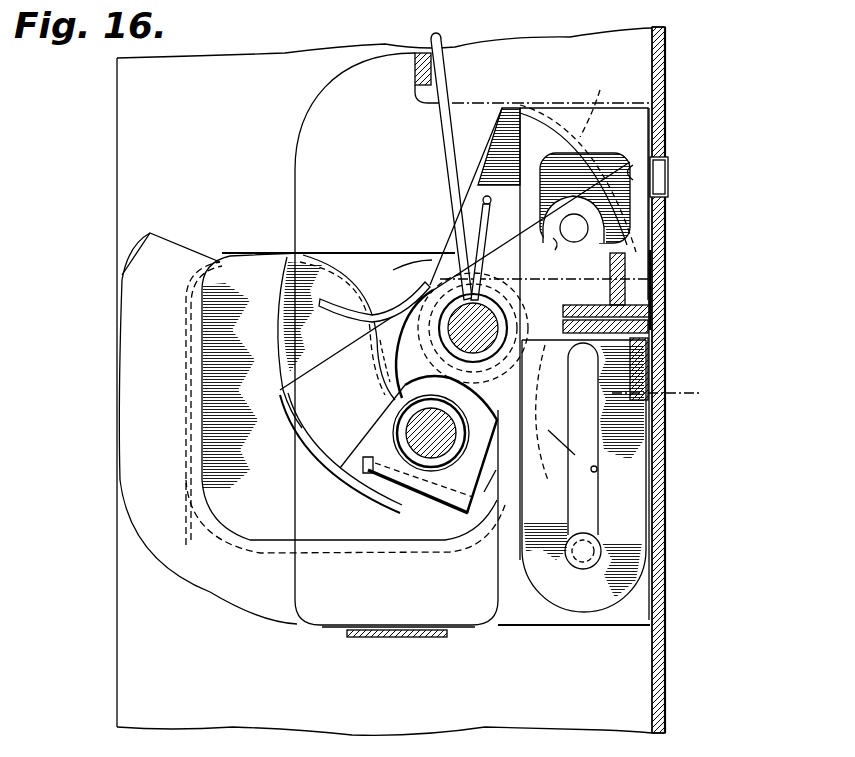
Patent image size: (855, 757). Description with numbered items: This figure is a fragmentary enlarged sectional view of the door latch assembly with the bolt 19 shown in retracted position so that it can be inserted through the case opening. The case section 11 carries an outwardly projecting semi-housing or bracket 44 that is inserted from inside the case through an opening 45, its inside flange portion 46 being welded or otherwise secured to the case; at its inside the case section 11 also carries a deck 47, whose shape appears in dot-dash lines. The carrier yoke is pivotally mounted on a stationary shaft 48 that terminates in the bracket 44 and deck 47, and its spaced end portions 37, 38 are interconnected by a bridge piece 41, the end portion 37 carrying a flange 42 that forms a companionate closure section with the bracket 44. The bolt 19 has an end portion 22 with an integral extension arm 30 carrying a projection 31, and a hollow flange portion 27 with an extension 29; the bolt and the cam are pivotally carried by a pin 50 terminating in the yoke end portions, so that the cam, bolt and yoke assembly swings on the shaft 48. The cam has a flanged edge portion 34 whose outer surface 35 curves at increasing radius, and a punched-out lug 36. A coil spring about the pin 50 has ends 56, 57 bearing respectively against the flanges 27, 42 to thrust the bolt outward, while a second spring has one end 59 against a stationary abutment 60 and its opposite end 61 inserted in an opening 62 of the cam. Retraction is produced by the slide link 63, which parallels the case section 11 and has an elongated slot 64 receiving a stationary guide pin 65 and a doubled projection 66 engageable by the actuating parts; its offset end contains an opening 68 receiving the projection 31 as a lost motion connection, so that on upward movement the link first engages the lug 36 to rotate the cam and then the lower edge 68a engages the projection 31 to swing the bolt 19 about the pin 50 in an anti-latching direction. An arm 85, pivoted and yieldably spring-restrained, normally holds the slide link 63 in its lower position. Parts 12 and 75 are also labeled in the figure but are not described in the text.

The case section 11 is at (140, 158).
The side wall 12 is at (666, 591).
The bolt 19 is at (323, 468).
The end portion 22 is at (313, 407).
The hollow flange portion 27 is at (278, 303).
The extension 29 is at (378, 500).
The extension arm 30 is at (628, 231).
The projection 31 is at (582, 222).
The flanged edge portion 34 is at (556, 128).
The outer surface 35 is at (596, 103).
The punched-out lug 36 is at (506, 214).
The end portion 37 is at (410, 287).
The end portion 38 is at (378, 492).
The bridge piece 41 is at (426, 494).
The flange 42 is at (665, 386).
The bracket 44 is at (245, 262).
The opening 45 is at (262, 540).
The inside flange portion 46 is at (133, 337).
The deck 47 is at (288, 158).
The stationary shaft 48 is at (405, 408).
The pin 50 is at (472, 300).
The spring end 56 is at (352, 275).
The spring end 57 is at (527, 434).
The spring end 59 is at (445, 84).
The stationary abutment 60 is at (414, 76).
The spring end 61 is at (480, 224).
The opening 62 is at (483, 200).
The slide link 63 is at (636, 503).
The elongated slot 64 is at (597, 469).
The stationary guide pin 65 is at (601, 548).
The projection 66 is at (637, 318).
The opening 68 is at (636, 176).
The lower edge 68a is at (562, 258).
The block 75 is at (642, 359).
The arm 85 is at (628, 259).